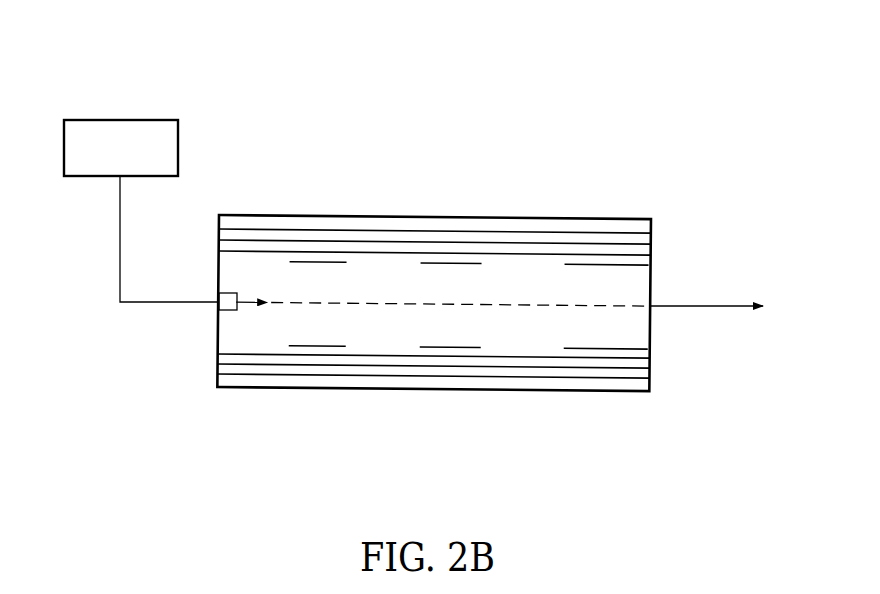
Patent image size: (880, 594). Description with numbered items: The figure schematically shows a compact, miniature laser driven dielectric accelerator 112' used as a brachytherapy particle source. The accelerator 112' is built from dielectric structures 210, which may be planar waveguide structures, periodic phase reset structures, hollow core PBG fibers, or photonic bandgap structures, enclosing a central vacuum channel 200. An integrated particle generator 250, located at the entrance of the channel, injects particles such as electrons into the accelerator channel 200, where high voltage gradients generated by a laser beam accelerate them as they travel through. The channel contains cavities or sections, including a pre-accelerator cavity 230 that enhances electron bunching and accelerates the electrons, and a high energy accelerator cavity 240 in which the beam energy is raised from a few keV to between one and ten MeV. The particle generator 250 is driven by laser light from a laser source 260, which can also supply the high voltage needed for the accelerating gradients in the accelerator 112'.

The laser driven dielectric accelerator 112' is at (397, 279).
The vacuum channel 200 is at (372, 337).
The dielectric structures 210 is at (588, 242).
The pre-accelerator cavity 230 is at (265, 325).
The high energy accelerator cavity 240 is at (533, 333).
The particle generator 250 is at (219, 315).
The laser source 260 is at (165, 119).